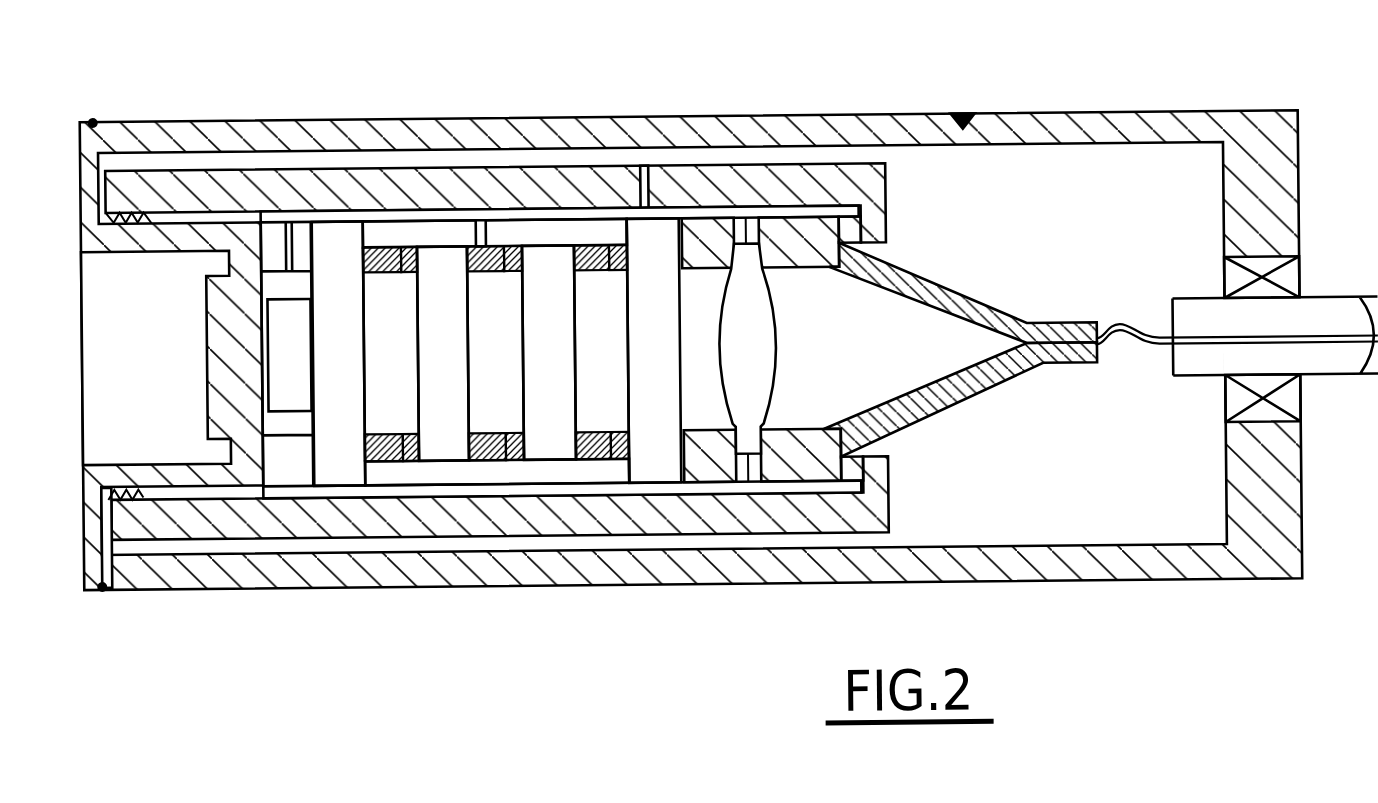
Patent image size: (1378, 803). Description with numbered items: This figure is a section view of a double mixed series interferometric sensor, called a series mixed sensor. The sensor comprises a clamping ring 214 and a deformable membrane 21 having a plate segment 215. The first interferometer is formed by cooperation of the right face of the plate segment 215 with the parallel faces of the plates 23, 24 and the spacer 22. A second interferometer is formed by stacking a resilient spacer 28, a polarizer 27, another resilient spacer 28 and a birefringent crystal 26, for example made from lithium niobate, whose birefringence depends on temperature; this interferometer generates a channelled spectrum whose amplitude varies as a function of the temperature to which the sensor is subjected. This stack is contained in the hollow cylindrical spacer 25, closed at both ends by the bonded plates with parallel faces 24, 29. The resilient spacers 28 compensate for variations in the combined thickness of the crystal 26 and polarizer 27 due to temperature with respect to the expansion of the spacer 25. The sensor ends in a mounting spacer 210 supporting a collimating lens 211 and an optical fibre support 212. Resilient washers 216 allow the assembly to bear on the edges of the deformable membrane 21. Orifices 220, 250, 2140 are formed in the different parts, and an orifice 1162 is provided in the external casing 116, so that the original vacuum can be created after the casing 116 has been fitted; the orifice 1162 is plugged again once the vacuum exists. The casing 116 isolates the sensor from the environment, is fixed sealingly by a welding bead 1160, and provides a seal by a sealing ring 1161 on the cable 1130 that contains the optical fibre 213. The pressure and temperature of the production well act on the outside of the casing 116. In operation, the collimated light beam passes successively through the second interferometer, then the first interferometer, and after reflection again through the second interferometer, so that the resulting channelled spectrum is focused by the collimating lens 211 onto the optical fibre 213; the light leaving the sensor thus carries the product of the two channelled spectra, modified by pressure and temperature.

The external casing 116 is at (1257, 122).
The welding bead 1160 is at (97, 121).
The orifice 1162 is at (976, 126).
The sealing ring 1161 is at (1293, 407).
The cable 1130 is at (1318, 325).
The deformable membrane 21 is at (166, 235).
The orifice 2140 is at (648, 177).
The clamping ring 214 is at (210, 521).
The plate segment 215 is at (207, 393).
The spacer 22 is at (303, 235).
The orifice 220 is at (288, 229).
The plate with parallel faces 23 is at (287, 320).
The plate with parallel faces 24 is at (337, 347).
The hollow cylindrical spacer 25 is at (418, 476).
The orifice 250 is at (482, 232).
The birefringent crystal 26 is at (458, 451).
The polarizer 27 is at (562, 408).
The resilient spacer 28 is at (382, 436).
The plate with parallel faces 29 is at (667, 403).
The mounting spacer 210 is at (722, 240).
The collimating lens 211 is at (752, 355).
The optical fibre support 212 is at (913, 291).
The resilient washers 216 is at (843, 438).
The optical fibre 213 is at (1110, 338).